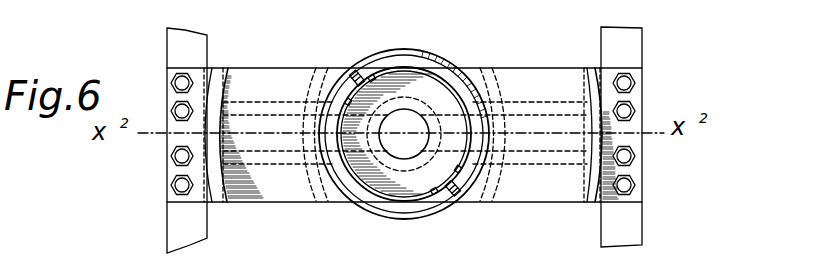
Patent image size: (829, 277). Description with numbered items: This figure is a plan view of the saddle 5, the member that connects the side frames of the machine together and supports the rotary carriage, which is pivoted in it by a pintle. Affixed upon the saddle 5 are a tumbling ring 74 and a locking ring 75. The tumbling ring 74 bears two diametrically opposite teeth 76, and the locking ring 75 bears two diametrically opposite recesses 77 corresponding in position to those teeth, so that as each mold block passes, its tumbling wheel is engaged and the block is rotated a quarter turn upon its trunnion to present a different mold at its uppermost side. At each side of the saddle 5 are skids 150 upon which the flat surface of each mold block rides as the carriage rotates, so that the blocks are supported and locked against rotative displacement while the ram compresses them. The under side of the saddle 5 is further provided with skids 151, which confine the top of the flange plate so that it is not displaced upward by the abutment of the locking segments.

The saddle 5 is at (279, 88).
The tumbling ring 74 is at (427, 50).
The locking ring 75 is at (443, 72).
The teeth 76 is at (354, 72).
The recesses 77 is at (392, 134).
The skids 150 is at (211, 92).
The skids 151 is at (315, 191).